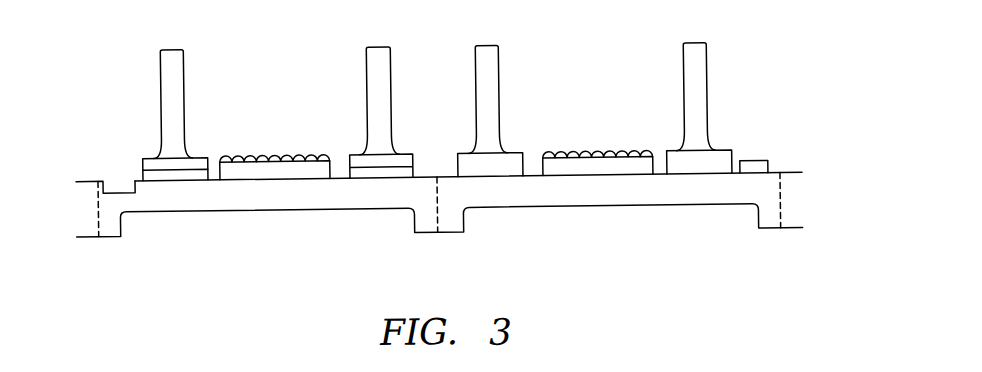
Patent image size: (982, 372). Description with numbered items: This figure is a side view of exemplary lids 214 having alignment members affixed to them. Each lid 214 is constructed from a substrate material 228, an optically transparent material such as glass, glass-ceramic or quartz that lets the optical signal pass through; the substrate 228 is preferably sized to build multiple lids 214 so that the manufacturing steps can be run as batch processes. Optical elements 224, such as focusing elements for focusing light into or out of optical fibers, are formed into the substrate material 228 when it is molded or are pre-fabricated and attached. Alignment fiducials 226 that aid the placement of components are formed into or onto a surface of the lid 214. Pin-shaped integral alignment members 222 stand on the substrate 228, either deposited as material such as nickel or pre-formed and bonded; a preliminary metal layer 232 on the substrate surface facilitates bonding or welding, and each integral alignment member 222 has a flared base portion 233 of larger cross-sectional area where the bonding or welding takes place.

The lid 214 is at (313, 61).
The integral alignment member 222 is at (168, 69).
The optical element 224 is at (282, 176).
The alignment fiducial 226 is at (113, 188).
The substrate material 228 is at (348, 201).
The preliminary metal layer 232 is at (148, 176).
The flared base portion 233 is at (208, 162).